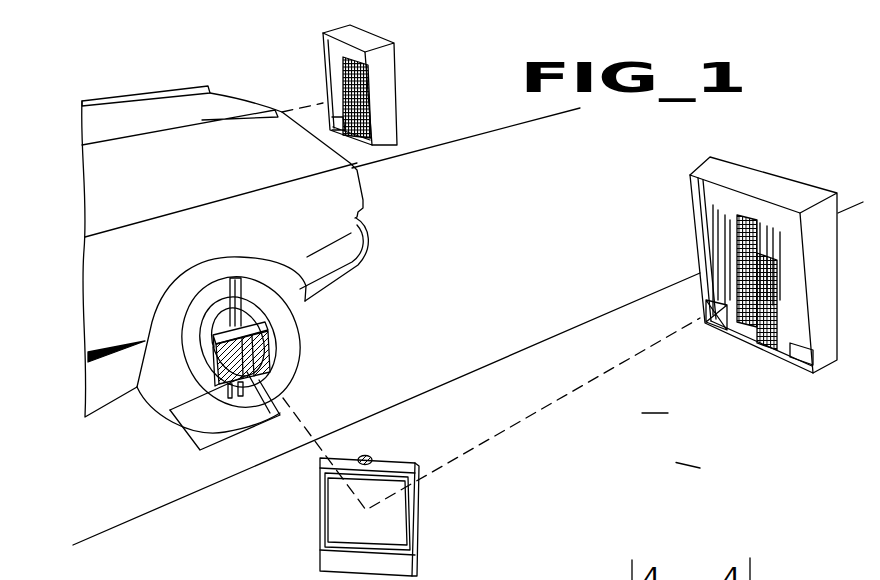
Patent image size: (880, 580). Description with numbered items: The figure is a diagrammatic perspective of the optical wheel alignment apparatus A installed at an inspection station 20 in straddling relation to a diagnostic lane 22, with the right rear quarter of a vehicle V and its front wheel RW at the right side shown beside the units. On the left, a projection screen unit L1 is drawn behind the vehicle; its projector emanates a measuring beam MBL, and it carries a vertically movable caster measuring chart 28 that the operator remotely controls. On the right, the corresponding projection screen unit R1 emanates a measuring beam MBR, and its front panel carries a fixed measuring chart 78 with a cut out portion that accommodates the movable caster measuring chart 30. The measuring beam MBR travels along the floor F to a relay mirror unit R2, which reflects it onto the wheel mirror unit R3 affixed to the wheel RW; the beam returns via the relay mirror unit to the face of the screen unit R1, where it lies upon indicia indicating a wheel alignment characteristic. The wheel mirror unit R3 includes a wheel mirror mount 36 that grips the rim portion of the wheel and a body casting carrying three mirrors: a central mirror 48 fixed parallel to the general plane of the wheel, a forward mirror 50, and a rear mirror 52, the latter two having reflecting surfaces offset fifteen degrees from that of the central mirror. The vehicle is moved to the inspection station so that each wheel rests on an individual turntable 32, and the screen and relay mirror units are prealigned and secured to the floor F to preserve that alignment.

The vehicle V is at (133, 107).
The projection screen unit L1 is at (323, 40).
The measuring beam MBL is at (302, 108).
The caster measuring chart 28 is at (365, 117).
The optical wheel alignment apparatus A is at (744, 144).
The projection screen unit R1 is at (700, 209).
The fixed measuring chart 78 is at (718, 242).
The caster measuring chart 30 is at (740, 272).
The diagnostic lane 22 is at (583, 320).
The measuring beam MBR is at (538, 412).
The floor F is at (655, 400).
The inspection station 20 is at (673, 462).
The relay mirror unit R2 is at (417, 502).
The wheel mirror mount 36 is at (230, 323).
The forward mirror 50 is at (268, 331).
The front wheel RW is at (298, 343).
The wheel mirror unit R3 is at (272, 354).
The rear mirror 52 is at (170, 410).
The central mirror 48 is at (250, 373).
The turntable 32 is at (198, 448).